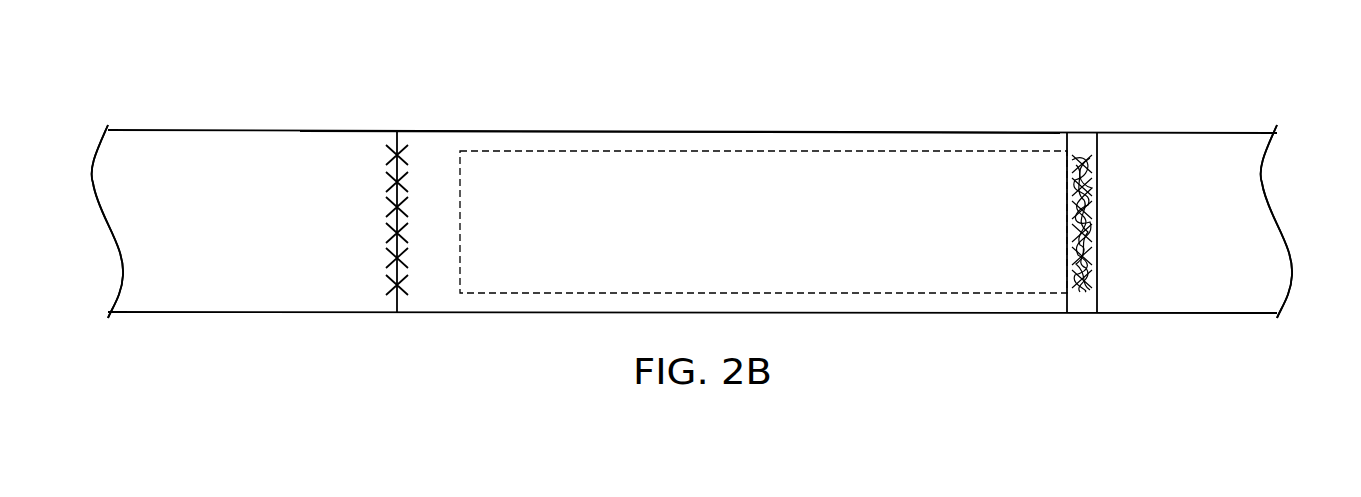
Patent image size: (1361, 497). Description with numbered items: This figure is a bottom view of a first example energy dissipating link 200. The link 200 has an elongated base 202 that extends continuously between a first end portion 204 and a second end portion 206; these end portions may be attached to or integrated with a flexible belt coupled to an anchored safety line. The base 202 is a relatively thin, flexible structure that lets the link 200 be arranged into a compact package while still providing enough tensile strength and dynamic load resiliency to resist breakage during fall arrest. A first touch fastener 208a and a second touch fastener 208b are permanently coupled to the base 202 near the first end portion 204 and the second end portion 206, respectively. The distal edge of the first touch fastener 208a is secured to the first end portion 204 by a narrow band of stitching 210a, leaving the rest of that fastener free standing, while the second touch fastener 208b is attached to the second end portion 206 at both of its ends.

The energy dissipating link 200 is at (178, 58).
The elongated base 202 is at (333, 118).
The first end portion 204 is at (93, 183).
The second end portion 206 is at (1275, 218).
The first touch fastener 208a is at (423, 118).
The second touch fastener 208b is at (586, 149).
The narrow band of stitching 210a is at (390, 224).